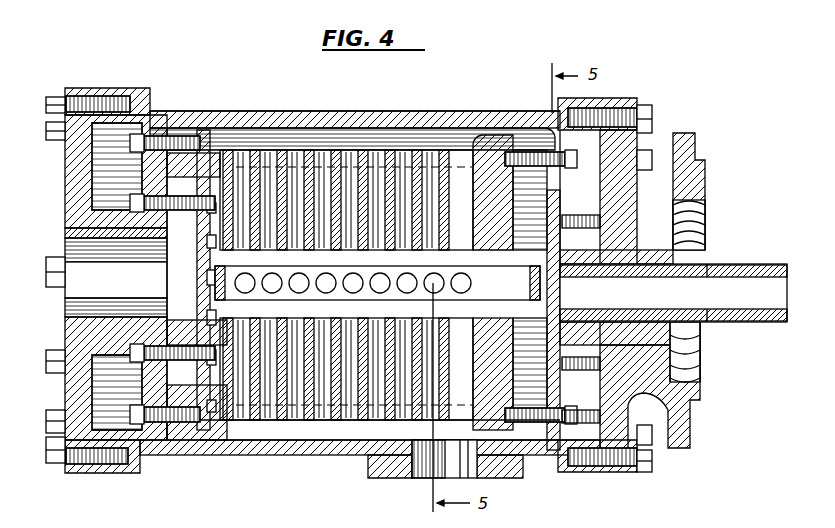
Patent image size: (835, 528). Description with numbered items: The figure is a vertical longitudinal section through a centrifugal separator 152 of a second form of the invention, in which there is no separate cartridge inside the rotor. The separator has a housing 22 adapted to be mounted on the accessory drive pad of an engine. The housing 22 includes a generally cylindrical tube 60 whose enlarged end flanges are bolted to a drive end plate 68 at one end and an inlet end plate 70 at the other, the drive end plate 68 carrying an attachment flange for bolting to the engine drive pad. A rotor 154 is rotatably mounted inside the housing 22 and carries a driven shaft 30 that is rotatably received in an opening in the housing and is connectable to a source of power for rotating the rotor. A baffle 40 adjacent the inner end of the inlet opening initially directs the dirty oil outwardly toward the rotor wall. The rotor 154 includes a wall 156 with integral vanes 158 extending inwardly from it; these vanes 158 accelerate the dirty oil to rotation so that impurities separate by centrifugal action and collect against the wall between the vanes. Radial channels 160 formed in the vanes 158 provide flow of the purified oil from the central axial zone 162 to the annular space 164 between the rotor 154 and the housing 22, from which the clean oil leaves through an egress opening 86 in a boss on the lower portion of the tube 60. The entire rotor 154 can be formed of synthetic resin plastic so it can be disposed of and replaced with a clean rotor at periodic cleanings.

The housing 22 is at (350, 110).
The driven shaft 30 is at (688, 262).
The baffle 40 is at (213, 262).
The tube 60 is at (422, 119).
The drive end plate 68 is at (700, 198).
The inlet end plate 70 is at (70, 218).
The egress opening 86 is at (418, 478).
The centrifugal separator 152 is at (665, 112).
The rotor 154 is at (293, 425).
The wall 156 is at (212, 150).
The vanes 158 is at (567, 180).
The radial channels 160 is at (353, 273).
The axial zone 162 is at (467, 306).
The annular space 164 is at (332, 428).